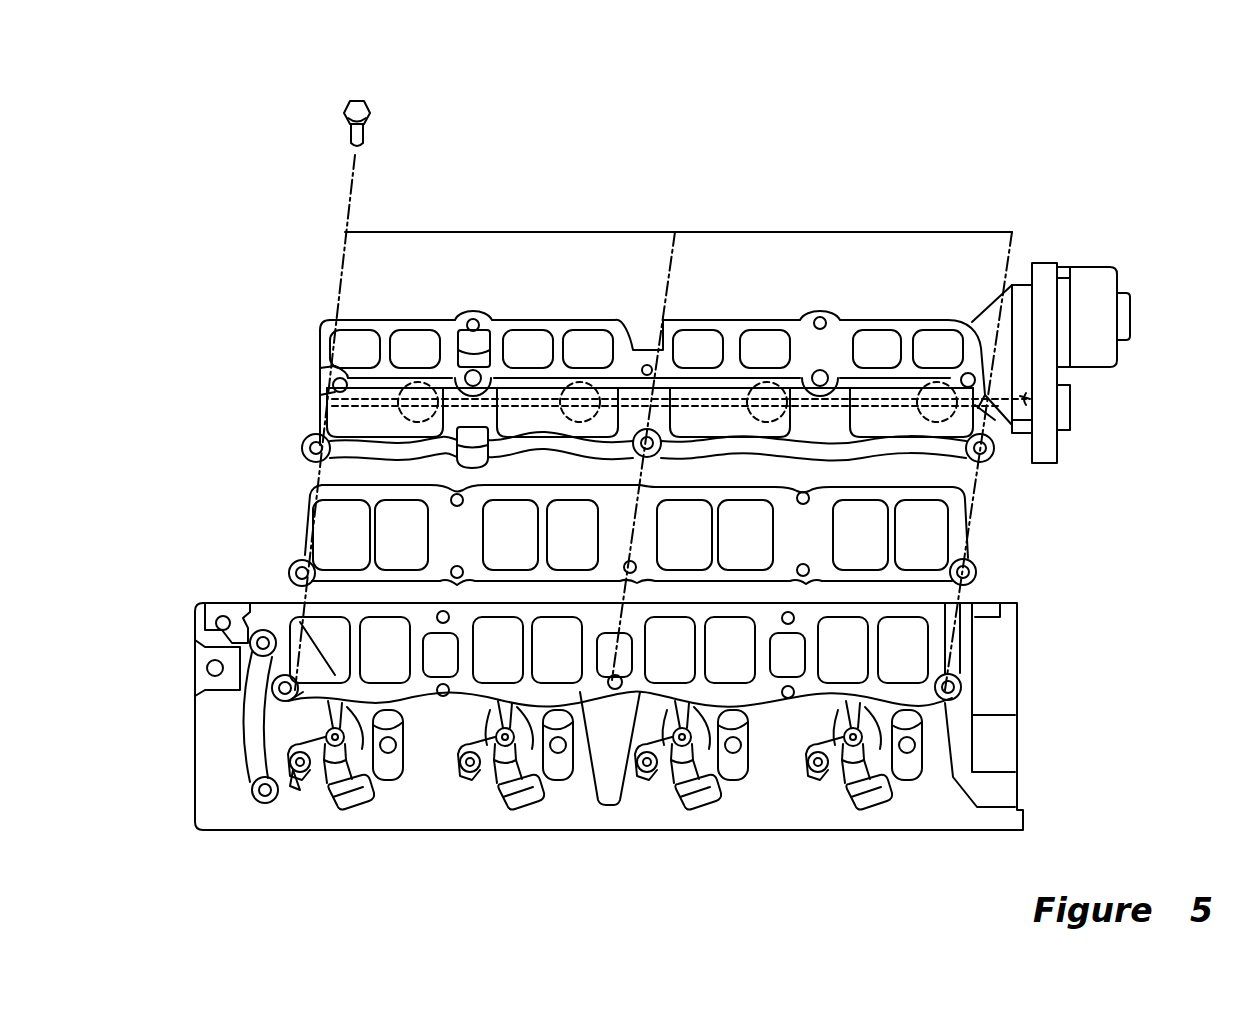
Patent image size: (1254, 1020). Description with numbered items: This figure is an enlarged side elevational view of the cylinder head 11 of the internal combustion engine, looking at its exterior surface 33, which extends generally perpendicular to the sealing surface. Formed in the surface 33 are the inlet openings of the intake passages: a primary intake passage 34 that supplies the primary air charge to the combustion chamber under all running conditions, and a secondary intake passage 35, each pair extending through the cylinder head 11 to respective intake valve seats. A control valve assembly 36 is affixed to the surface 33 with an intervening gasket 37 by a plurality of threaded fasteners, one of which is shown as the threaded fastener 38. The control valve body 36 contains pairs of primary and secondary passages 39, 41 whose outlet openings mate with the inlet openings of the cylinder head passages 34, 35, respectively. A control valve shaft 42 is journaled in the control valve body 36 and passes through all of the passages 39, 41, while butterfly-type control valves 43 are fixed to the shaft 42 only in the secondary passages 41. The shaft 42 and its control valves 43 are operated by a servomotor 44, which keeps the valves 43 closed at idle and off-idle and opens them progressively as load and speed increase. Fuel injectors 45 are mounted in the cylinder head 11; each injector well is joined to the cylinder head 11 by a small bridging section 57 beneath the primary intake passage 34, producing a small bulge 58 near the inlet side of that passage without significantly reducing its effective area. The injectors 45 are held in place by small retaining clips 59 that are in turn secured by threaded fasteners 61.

The cylinder head 11 is at (1018, 680).
The exterior surface 33 is at (290, 700).
The primary intake passage 34 is at (327, 627).
The secondary intake passage 35 is at (380, 625).
The control valve assembly 36 is at (306, 369).
The gasket 37 is at (975, 487).
The threaded fastener 38 is at (370, 98).
The primary passage 39 is at (360, 340).
The secondary passage 41 is at (415, 340).
The control valve shaft 42 is at (715, 393).
The control valve 43 is at (536, 392).
The servomotor 44 is at (1090, 282).
The fuel injector 45 is at (356, 813).
The bridging section 57 is at (330, 723).
The bulge 58 is at (300, 622).
The retaining clip 59 is at (293, 787).
The threaded fastener 61 is at (303, 790).